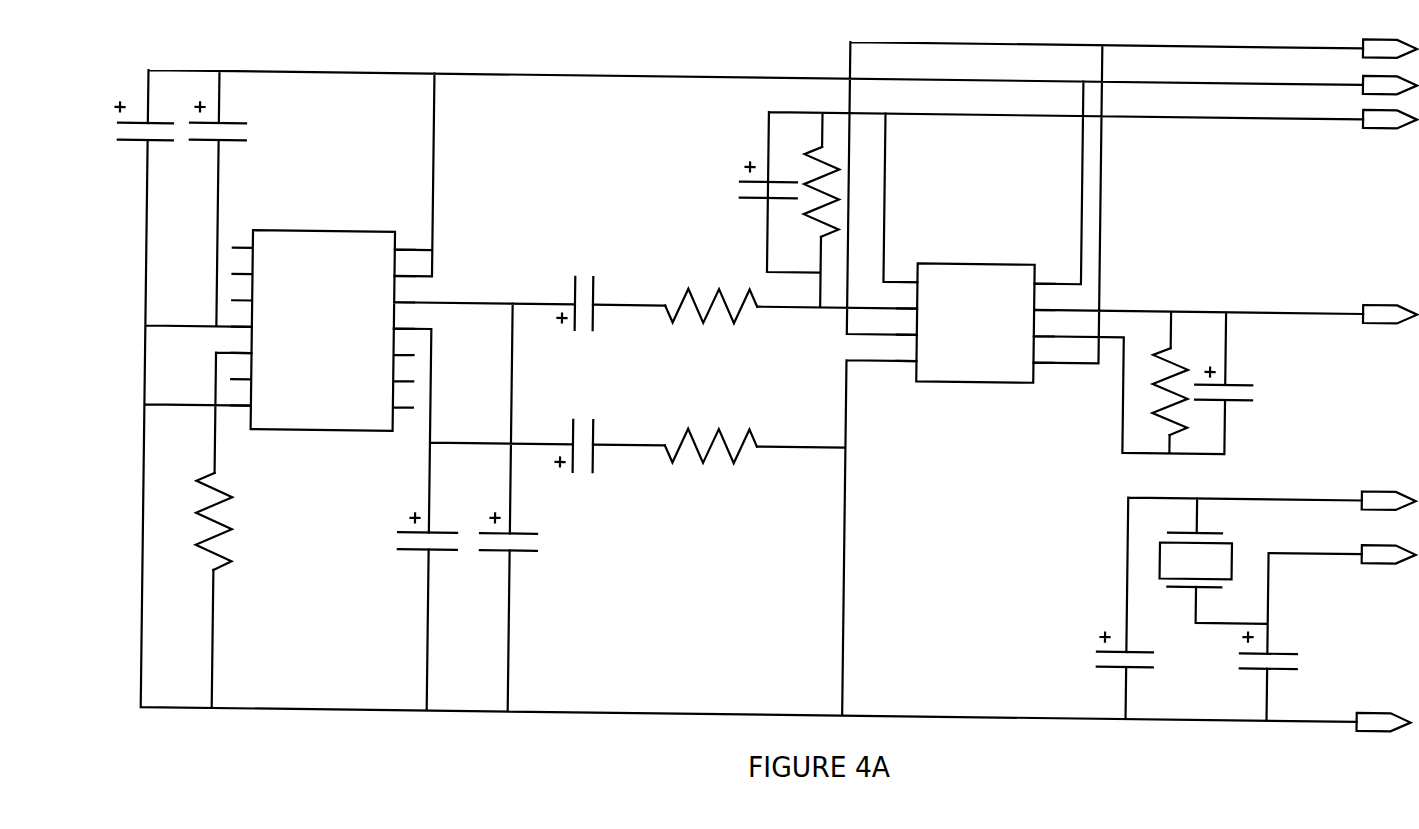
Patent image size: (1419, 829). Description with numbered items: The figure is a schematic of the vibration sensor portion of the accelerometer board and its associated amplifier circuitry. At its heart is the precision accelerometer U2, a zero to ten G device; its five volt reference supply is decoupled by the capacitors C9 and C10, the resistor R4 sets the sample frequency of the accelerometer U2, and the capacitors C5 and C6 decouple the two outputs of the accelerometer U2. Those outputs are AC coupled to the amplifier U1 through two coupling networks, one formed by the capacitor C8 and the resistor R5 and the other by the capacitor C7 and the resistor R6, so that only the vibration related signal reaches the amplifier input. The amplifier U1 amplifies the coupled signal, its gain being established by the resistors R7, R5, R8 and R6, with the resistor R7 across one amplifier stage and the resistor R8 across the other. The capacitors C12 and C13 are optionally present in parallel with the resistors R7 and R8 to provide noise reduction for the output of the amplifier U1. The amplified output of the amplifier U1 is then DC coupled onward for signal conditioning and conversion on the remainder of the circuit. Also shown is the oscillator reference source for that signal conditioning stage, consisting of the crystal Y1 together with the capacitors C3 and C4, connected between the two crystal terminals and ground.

The decoupling capacitor C9 is at (160, 130).
The decoupling capacitor C10 is at (233, 131).
The precision accelerometer U2 is at (325, 331).
The sample frequency resistor R4 is at (228, 522).
The output decoupling capacitor C5 is at (401, 548).
The output decoupling capacitor C6 is at (528, 548).
The AC coupling capacitor C8 is at (581, 306).
The AC coupling capacitor C7 is at (579, 448).
The coupling and gain resistor R5 is at (710, 312).
The coupling and gain resistor R6 is at (710, 448).
The noise reduction capacitor C12 is at (739, 196).
The amplifier gain resistor R7 is at (843, 192).
The amplifier U1 is at (975, 324).
The amplifier gain resistor R8 is at (1158, 393).
The noise reduction capacitor C13 is at (1246, 400).
The crystal oscillator Y1 is at (1178, 565).
The oscillator capacitor C3 is at (1139, 664).
The oscillator capacitor C4 is at (1281, 665).